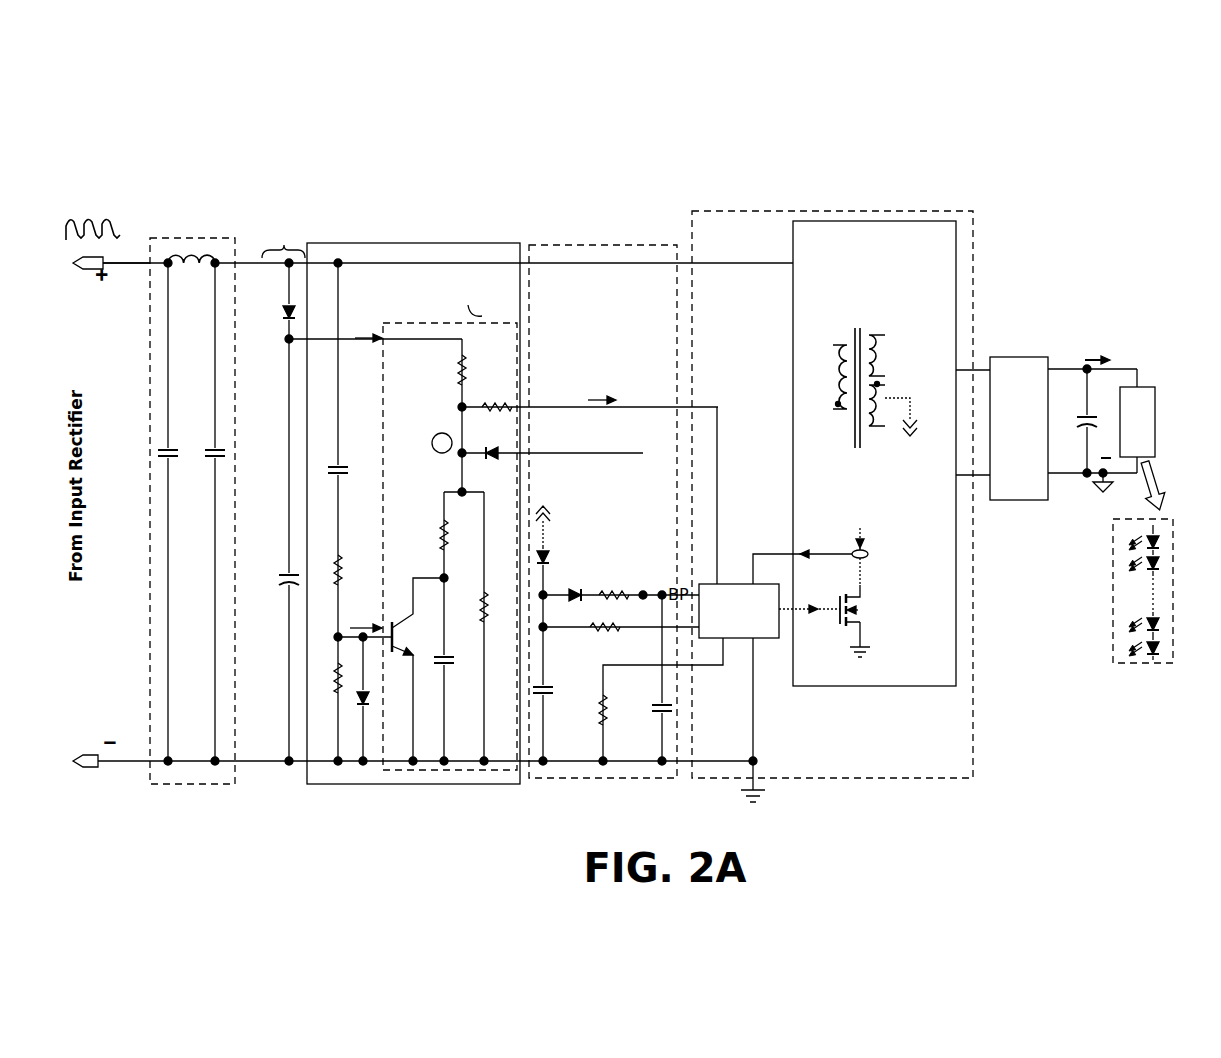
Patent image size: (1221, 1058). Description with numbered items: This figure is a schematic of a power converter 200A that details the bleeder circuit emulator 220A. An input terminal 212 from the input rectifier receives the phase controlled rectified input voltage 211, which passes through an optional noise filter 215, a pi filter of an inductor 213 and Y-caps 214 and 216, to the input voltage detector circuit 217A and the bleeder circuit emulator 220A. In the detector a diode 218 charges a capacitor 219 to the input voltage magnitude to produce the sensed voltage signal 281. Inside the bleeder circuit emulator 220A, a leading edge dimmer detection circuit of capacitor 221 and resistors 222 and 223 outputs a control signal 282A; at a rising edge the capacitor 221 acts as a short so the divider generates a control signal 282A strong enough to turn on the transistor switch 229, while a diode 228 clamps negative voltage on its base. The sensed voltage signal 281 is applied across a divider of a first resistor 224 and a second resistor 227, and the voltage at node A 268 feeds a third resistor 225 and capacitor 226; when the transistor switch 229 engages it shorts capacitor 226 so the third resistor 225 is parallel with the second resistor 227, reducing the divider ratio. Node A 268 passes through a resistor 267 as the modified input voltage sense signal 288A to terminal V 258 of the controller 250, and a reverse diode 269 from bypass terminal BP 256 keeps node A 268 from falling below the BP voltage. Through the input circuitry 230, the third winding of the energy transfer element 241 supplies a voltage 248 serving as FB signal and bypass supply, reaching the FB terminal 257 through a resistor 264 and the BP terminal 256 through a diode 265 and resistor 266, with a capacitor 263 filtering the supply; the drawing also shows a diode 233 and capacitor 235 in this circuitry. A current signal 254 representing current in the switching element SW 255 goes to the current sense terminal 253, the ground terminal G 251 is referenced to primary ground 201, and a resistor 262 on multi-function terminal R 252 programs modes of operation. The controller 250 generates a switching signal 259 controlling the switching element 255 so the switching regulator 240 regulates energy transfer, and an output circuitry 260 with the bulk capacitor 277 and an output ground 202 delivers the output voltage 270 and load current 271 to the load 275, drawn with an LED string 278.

The power converter 200A is at (1036, 156).
The primary ground 201 is at (768, 803).
The output ground reference 202 is at (1090, 510).
The phase controlled rectified input voltage 211 is at (80, 222).
The input terminal 212 is at (122, 258).
The inductor 213 is at (195, 275).
The Y-cap 214 is at (165, 446).
The noise filter 215 is at (165, 240).
The Y-cap 216 is at (210, 448).
The input voltage detector circuit 217A is at (288, 246).
The diode 218 is at (283, 314).
The capacitor 219 is at (280, 572).
The bleeder circuit emulator 220A is at (437, 243).
The capacitor 221 is at (335, 466).
The resistor 222 is at (335, 560).
The resistor 223 is at (333, 676).
The resistor R1 224 is at (470, 372).
The resistor R3 225 is at (437, 528).
The capacitor 226 is at (470, 645).
The resistor R2 227 is at (487, 596).
The diode 228 is at (372, 698).
The transistor switch Q1A 229 is at (400, 612).
The input circuitry 230 is at (593, 238).
The diode 233 is at (552, 557).
The capacitor 235 is at (555, 697).
The switching regulator 240 is at (835, 211).
The energy transfer element 241 is at (845, 338).
The FB signal voltage 248 is at (552, 515).
The controller 250 is at (728, 590).
The ground terminal G 251 is at (762, 662).
The multi-function terminal R 252 is at (733, 662).
The terminal Isns 253 is at (758, 572).
The current signal 254 is at (868, 548).
The switching element SW 255 is at (868, 606).
The bypass terminal BP 256 is at (660, 590).
The FB terminal 257 is at (680, 660).
The terminal V 258 is at (710, 570).
The switching signal 259 is at (820, 620).
The output circuitry 260 is at (1012, 356).
The resistor 262 is at (630, 698).
The capacitor 263 is at (655, 712).
The resistor 264 is at (600, 643).
The diode 265 is at (575, 590).
The resistor 266 is at (612, 592).
The resistor 267 is at (500, 404).
The node A 268 is at (432, 443).
The reverse diode 269 is at (498, 441).
The output voltage Vo 270 is at (1162, 358).
The load current Io 271 is at (1100, 355).
The load 275 is at (1158, 432).
The output capacitor C0 277 is at (1080, 428).
The LED string 278 is at (1134, 665).
The sensed voltage signal UV_SENSE 281 is at (370, 318).
The control signal UCNTRL 282A is at (366, 615).
The modified input voltage sense signal UV_SENSE_MOD 288A is at (612, 350).